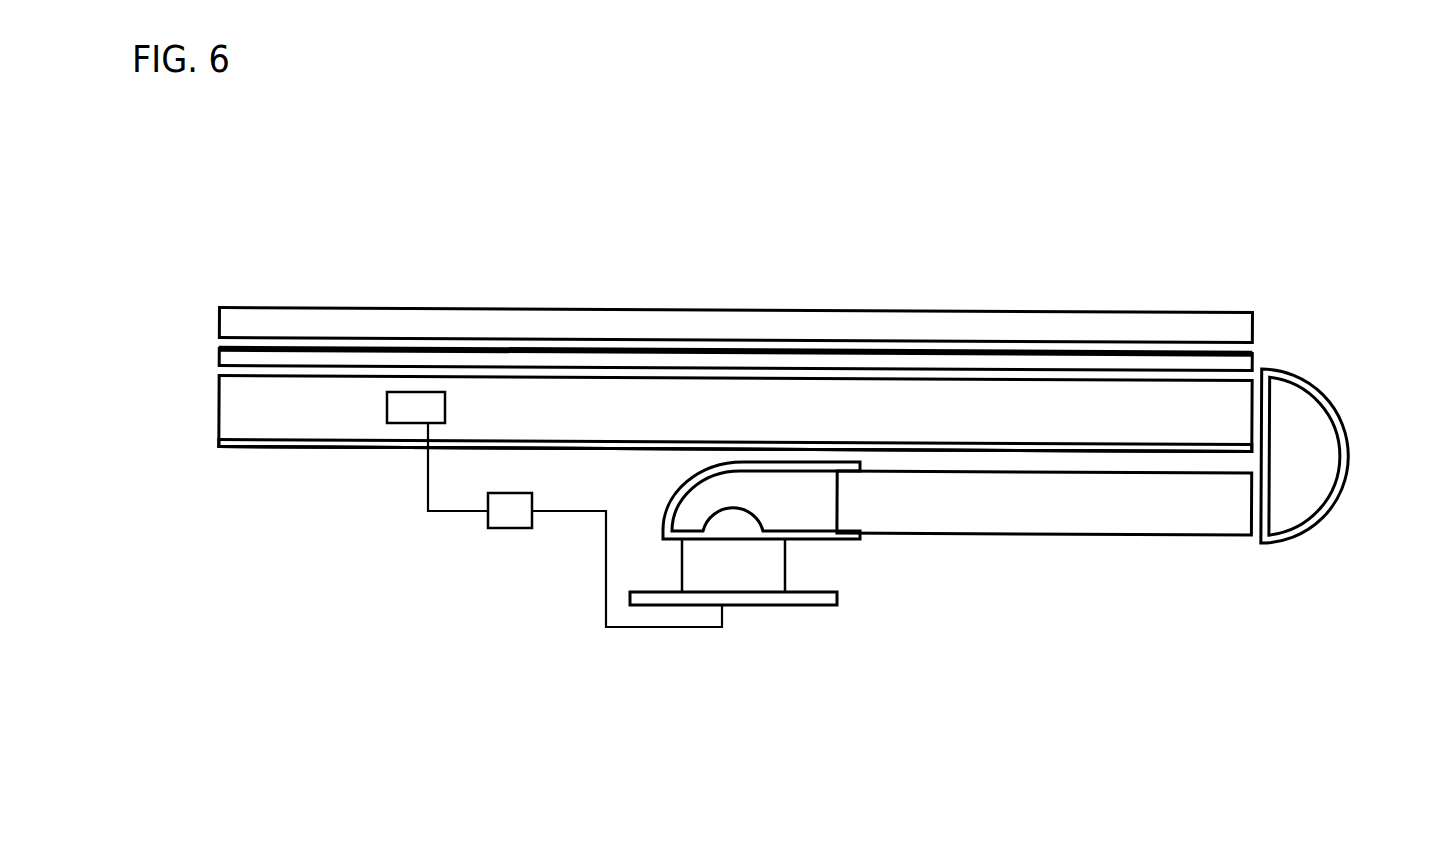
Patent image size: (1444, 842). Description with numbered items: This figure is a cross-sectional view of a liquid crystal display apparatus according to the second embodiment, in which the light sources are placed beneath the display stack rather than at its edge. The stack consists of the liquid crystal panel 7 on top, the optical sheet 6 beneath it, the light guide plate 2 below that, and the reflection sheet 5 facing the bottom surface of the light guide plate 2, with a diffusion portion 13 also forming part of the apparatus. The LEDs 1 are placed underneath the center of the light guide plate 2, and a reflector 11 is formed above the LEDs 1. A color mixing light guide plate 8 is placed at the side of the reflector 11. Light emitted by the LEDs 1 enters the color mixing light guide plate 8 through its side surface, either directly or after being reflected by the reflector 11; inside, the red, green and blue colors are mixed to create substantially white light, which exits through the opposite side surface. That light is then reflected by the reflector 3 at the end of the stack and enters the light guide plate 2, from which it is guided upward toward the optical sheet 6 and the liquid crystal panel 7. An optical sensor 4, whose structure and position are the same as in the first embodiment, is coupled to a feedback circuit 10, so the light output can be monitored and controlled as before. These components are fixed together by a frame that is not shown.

The LEDs 1 is at (732, 605).
The light guide plate 2 is at (1018, 397).
The reflector 3 is at (1342, 483).
The optical sensor 4 is at (412, 423).
The reflection sheet 5 is at (250, 447).
The optical sheet 6 is at (218, 358).
The liquid crystal panel 7 is at (218, 323).
The color mixing light guide plate 8 is at (1091, 506).
The feedback circuit 10 is at (505, 528).
The reflector 11 is at (703, 471).
The diffusion portion 13 is at (235, 440).